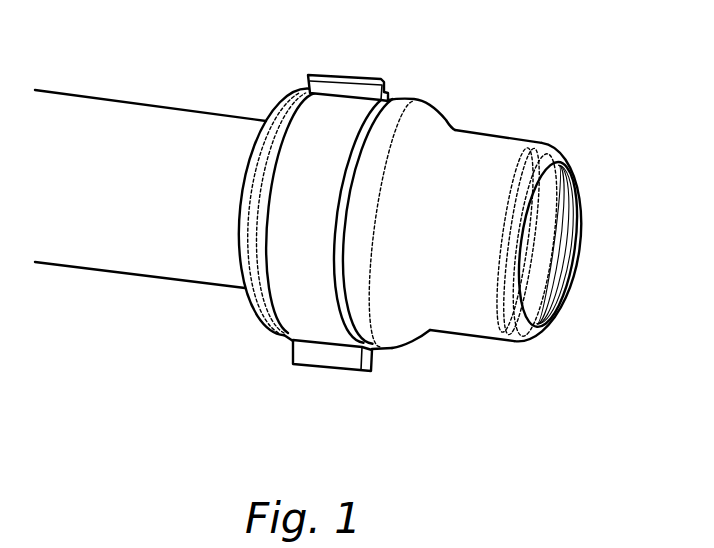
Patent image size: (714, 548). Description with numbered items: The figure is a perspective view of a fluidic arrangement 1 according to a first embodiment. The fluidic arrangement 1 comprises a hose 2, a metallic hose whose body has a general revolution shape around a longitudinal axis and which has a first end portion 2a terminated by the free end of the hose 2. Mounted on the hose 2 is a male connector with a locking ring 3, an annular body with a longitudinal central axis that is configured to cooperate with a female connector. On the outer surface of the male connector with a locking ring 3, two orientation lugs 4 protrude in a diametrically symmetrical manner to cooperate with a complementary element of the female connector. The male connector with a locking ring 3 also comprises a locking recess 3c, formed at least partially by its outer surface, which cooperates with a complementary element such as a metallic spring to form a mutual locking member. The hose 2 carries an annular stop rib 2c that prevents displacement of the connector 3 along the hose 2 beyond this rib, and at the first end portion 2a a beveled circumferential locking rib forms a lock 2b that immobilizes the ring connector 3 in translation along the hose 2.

The fluidic arrangement 1 is at (308, 233).
The hose 2 is at (178, 268).
The first end portion 2a is at (493, 158).
The lock 2b is at (428, 132).
The stop rib 2c is at (250, 313).
The male connector with a locking ring 3 is at (290, 318).
The locking recess 3c is at (379, 124).
The orientation lugs 4 is at (322, 88).